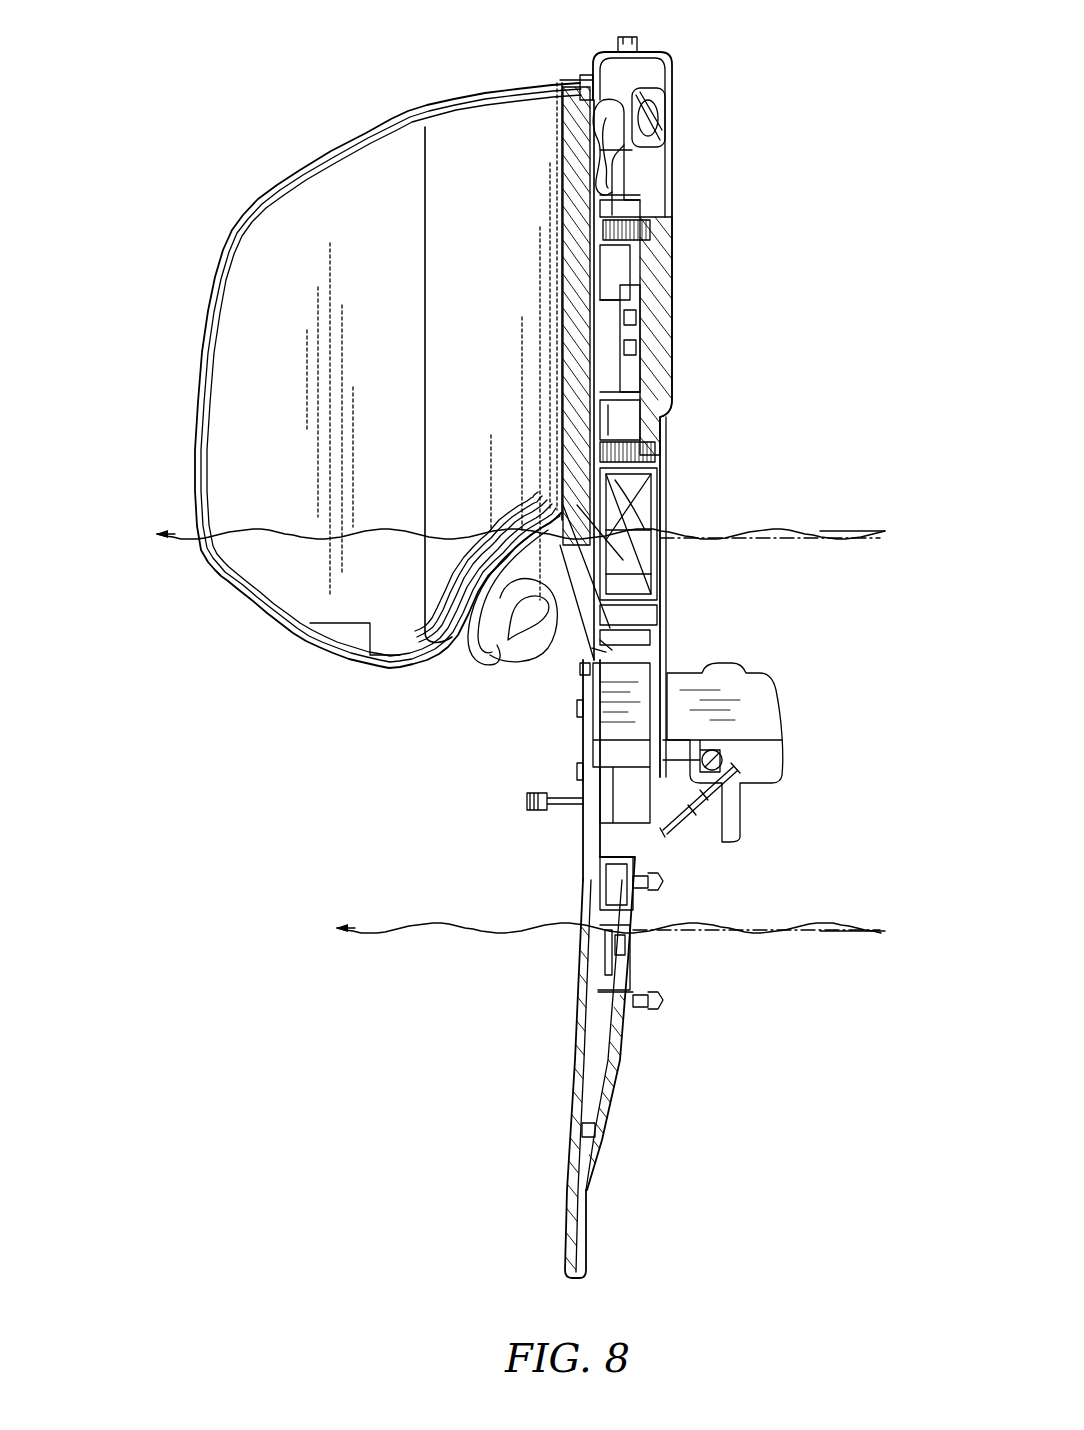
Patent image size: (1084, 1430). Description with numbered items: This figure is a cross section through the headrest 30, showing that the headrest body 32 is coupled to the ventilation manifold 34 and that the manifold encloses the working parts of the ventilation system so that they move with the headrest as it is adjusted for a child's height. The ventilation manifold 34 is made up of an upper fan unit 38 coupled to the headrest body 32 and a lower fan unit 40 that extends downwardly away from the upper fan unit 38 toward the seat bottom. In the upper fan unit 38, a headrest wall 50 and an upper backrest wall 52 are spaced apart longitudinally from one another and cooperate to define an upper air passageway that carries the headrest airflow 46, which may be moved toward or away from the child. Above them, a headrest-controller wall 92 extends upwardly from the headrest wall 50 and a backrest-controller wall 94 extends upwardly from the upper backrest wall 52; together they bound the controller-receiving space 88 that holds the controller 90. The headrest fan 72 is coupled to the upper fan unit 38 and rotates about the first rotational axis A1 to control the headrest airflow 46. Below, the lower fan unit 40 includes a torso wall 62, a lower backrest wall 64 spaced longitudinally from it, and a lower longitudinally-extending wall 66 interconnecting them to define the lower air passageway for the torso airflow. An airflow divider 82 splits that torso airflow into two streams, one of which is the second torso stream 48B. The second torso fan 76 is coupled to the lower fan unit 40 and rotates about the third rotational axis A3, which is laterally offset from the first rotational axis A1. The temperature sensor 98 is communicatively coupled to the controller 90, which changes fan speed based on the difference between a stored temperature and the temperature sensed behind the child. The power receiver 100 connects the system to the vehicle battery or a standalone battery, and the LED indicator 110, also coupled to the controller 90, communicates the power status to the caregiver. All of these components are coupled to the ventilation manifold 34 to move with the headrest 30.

The headrest 30 is at (148, 132).
The headrest body 32 is at (383, 163).
The ventilation manifold 34 is at (573, 684).
The upper fan unit 38 is at (629, 595).
The lower fan unit 40 is at (615, 1090).
The headrest airflow 46 is at (882, 536).
The second torso stream 48B is at (880, 931).
The headrest wall 50 is at (565, 507).
The upper backrest wall 52 is at (668, 420).
The torso wall 62 is at (570, 1175).
The lower backrest wall 64 is at (637, 858).
The lower longitudinally-extending wall 66 is at (600, 1045).
The headrest fan 72 is at (652, 547).
The second torso fan 76 is at (613, 893).
The airflow divider 82 is at (603, 1013).
The controller-receiving space 88 is at (617, 260).
The controller 90 is at (623, 297).
The headrest-controller wall 92 is at (597, 247).
The backrest-controller wall 94 is at (680, 319).
The temperature sensor 98 is at (537, 790).
The power receiver 100 is at (753, 833).
The LED indicator 110 is at (630, 33).
The first rotational axis A1 is at (815, 536).
The third rotational axis A3 is at (815, 930).